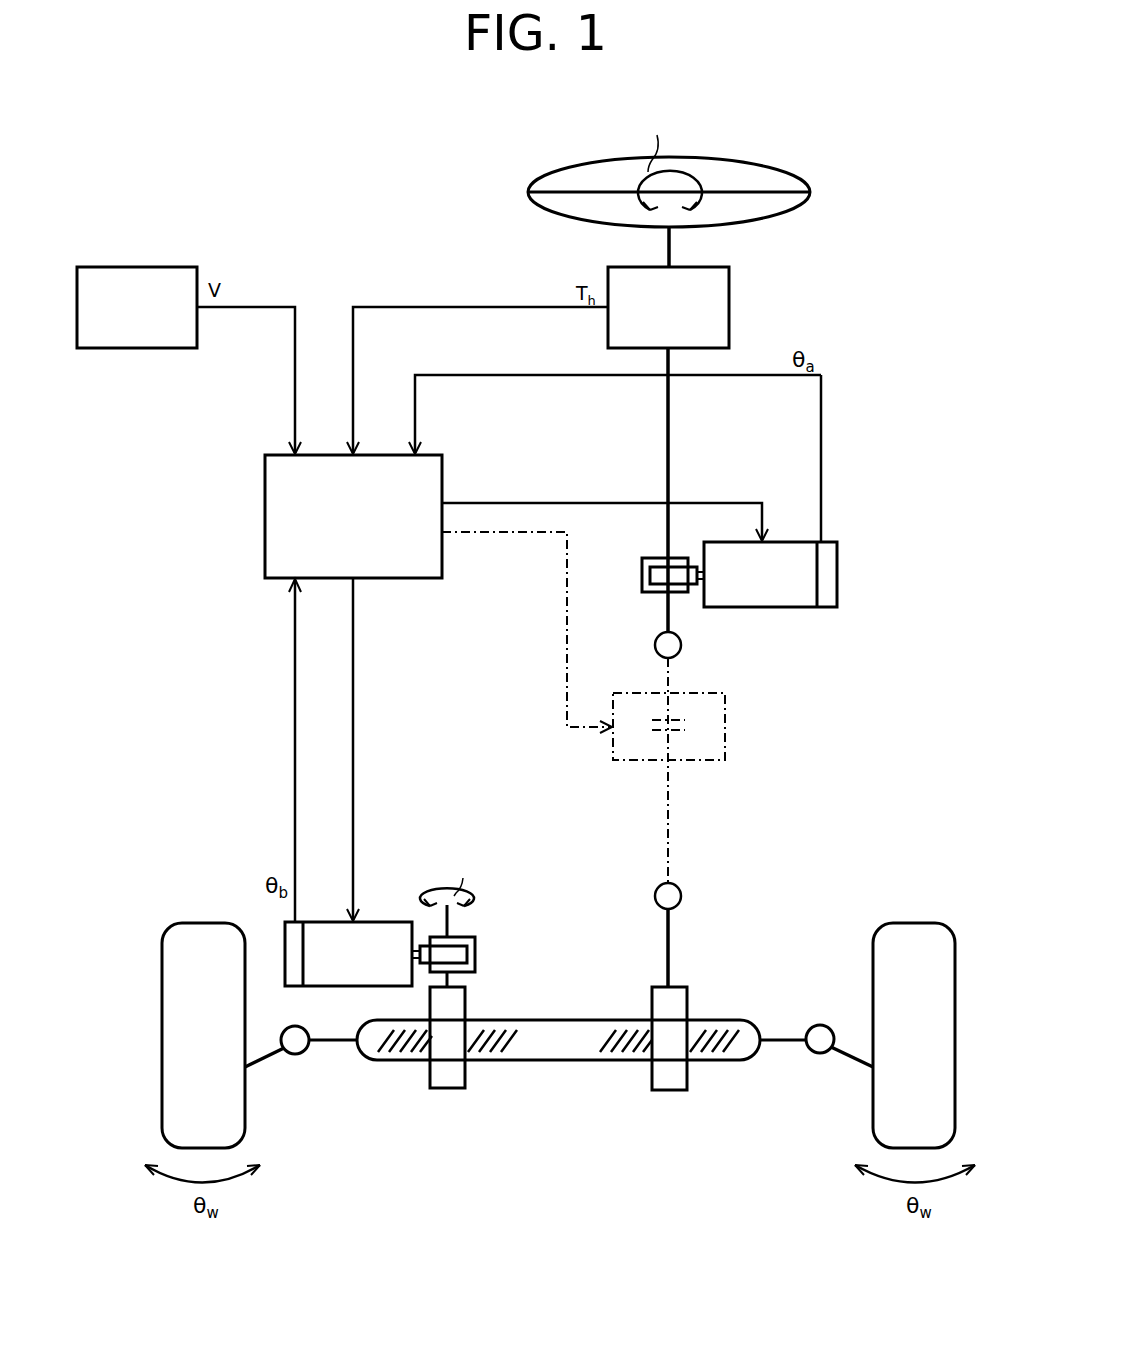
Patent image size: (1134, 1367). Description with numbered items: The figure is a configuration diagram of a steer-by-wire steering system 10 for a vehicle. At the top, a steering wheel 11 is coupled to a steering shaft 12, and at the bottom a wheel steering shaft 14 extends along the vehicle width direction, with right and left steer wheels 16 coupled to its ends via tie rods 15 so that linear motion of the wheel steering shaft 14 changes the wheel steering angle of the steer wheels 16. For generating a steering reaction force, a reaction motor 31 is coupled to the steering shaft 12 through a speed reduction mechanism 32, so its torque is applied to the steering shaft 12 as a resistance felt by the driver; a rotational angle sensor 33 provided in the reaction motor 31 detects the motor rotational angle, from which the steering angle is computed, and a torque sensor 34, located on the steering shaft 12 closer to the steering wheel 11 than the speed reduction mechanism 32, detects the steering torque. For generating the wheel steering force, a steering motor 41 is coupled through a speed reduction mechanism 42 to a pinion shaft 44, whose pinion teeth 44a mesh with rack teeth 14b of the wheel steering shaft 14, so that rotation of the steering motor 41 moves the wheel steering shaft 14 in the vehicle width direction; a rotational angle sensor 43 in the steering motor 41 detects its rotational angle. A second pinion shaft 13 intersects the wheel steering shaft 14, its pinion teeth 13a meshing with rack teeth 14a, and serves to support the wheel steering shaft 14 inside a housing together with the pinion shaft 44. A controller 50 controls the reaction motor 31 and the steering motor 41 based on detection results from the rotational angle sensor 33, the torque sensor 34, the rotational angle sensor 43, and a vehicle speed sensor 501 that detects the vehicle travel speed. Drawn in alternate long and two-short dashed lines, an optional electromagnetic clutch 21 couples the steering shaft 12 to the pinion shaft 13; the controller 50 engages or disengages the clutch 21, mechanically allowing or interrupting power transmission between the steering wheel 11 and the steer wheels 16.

The steering system 10 is at (838, 153).
The steering wheel 11 is at (746, 160).
The steering shaft 12 is at (672, 250).
The pinion shaft 13 is at (666, 955).
The pinion teeth 13a is at (670, 1090).
The wheel steering shaft 14 is at (558, 1069).
The rack teeth 14a is at (625, 1046).
The rack teeth 14b is at (490, 1062).
The tie rods 15 is at (328, 1043).
The steer wheels 16 is at (245, 1112).
The clutch 21 is at (725, 735).
The reaction motor 31 is at (795, 608).
The speed reduction mechanism 32 is at (637, 563).
The rotational angle sensor 33 is at (820, 608).
The torque sensor 34 is at (729, 305).
The steering motor 41 is at (385, 922).
The speed reduction mechanism 42 is at (488, 967).
The rotational angle sensor 43 is at (285, 968).
The pinion shaft 44 is at (455, 920).
The pinion teeth 44a is at (448, 1090).
The controller 50 is at (425, 579).
The vehicle speed sensor 501 is at (137, 267).